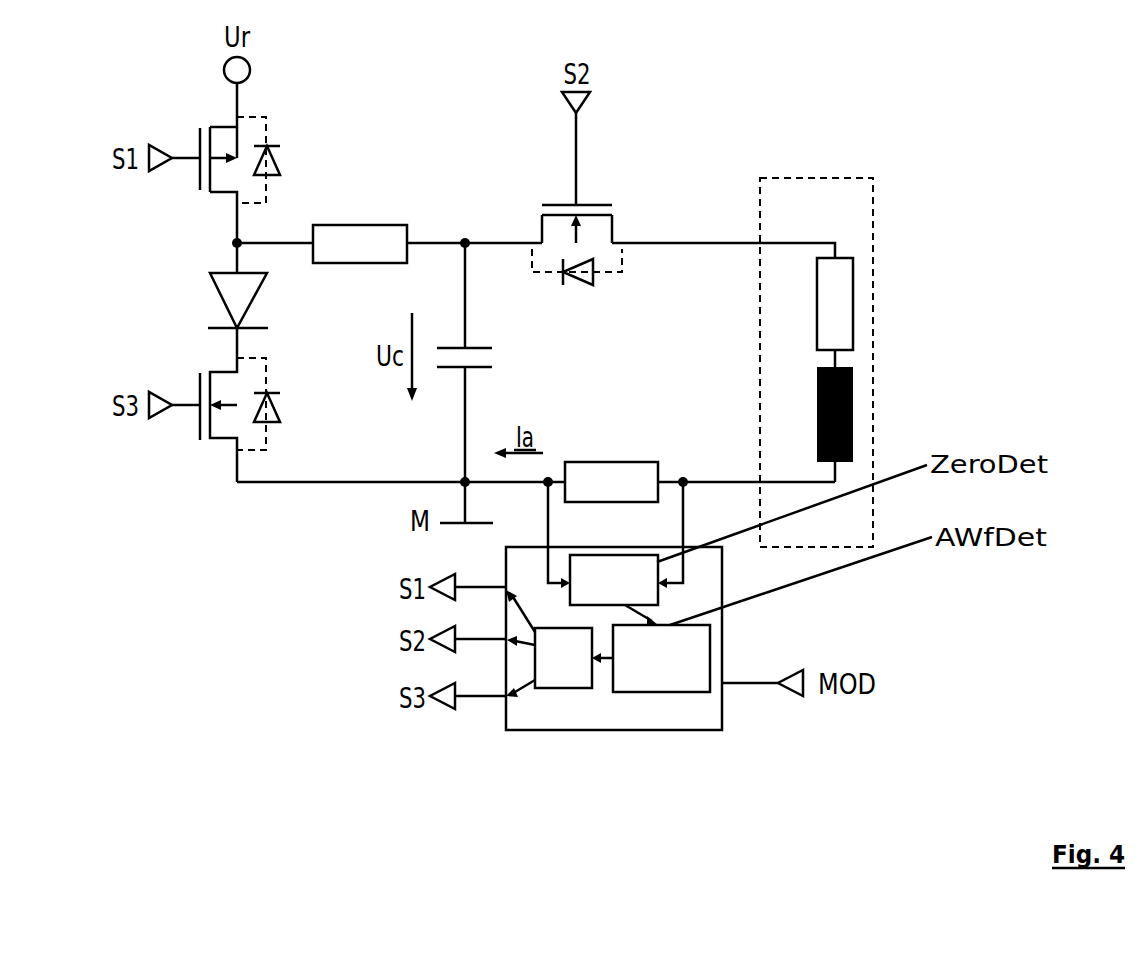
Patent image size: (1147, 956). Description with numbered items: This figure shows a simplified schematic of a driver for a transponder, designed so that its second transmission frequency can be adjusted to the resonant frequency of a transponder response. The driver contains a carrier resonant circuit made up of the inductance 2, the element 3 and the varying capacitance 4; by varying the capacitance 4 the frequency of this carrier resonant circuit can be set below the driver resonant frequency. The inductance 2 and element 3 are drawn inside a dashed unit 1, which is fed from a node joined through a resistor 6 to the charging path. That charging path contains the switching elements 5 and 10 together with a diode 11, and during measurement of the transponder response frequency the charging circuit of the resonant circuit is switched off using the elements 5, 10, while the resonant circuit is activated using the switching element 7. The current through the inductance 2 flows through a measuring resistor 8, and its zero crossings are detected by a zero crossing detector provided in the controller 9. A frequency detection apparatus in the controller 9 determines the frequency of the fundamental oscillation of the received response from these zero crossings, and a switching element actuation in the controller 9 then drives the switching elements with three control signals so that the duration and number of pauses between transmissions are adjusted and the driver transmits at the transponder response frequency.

The lamp unit 1 is at (770, 227).
The inductance 2 is at (821, 424).
The resonant circuit element 3 is at (821, 312).
The varying capacitance 4 is at (476, 383).
The switching element 5 is at (240, 180).
The resistor 6 is at (389, 222).
The switching element 7 is at (571, 199).
The measuring resistor 8 is at (611, 464).
The controller 9 is at (722, 625).
The switching element 10 is at (240, 420).
The diode 11 is at (227, 300).